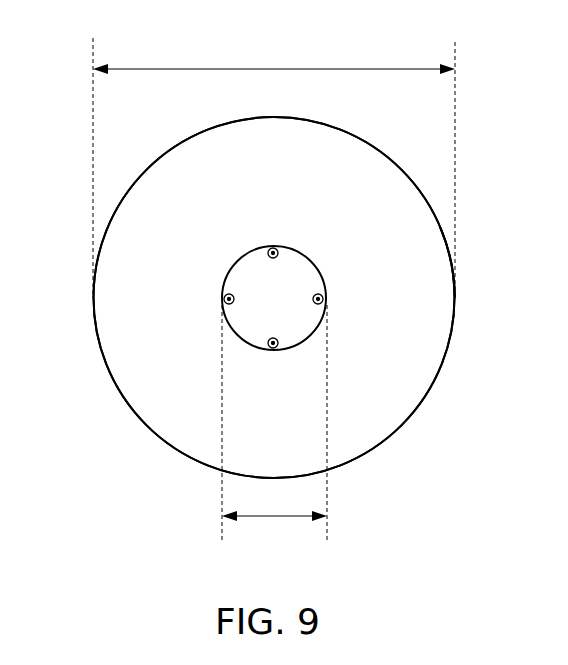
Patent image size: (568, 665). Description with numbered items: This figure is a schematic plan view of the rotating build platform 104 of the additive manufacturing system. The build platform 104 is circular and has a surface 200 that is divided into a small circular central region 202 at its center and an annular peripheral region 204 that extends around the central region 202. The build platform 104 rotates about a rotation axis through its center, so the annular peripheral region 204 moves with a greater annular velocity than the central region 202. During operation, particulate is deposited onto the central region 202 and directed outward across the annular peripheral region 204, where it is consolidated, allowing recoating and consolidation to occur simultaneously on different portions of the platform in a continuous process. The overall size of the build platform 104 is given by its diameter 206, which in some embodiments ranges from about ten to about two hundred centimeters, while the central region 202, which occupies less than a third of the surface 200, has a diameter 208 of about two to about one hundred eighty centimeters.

The build platform 104 is at (143, 163).
The surface 200 is at (106, 302).
The central region 202 is at (288, 273).
The annular peripheral region 204 is at (440, 303).
The diameter 206 is at (352, 68).
The diameter 208 is at (275, 519).